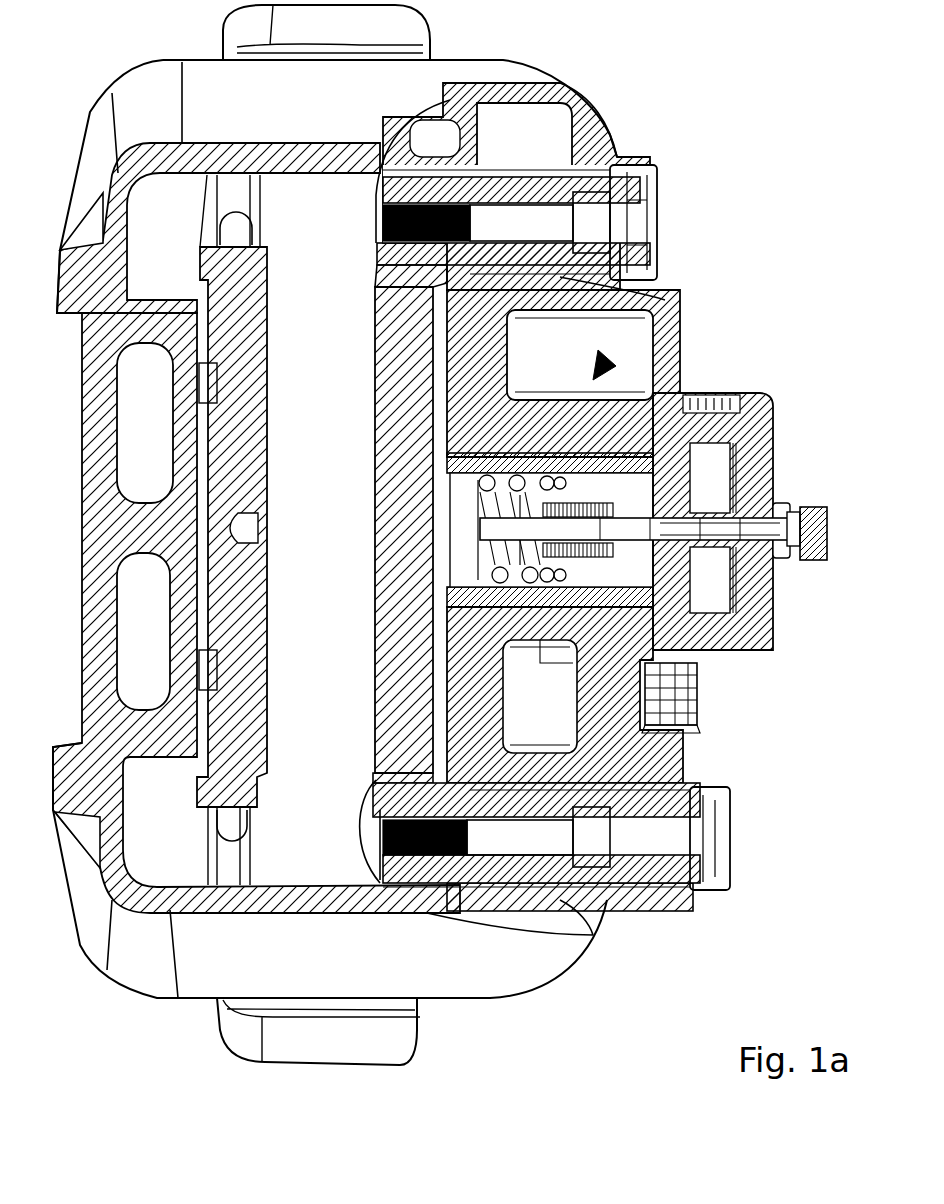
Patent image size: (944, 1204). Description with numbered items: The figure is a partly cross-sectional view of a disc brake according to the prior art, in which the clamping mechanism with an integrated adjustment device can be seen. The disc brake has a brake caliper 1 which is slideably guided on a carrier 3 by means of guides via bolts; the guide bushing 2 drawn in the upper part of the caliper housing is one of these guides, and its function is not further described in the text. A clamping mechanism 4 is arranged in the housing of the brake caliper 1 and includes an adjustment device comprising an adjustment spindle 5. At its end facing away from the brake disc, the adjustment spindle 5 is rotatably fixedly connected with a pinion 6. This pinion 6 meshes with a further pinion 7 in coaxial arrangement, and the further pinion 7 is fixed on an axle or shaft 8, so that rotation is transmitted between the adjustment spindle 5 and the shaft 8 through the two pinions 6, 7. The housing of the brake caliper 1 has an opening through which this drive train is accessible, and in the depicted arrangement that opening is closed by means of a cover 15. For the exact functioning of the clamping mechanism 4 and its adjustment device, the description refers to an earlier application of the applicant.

The brake caliper 1 is at (525, 967).
The first guide bearing 2 is at (545, 230).
The carrier 3 is at (390, 1047).
The clamping mechanism 4 is at (610, 358).
The adjustment spindle 5 is at (583, 470).
The pinion 6 is at (690, 393).
The further pinion 7 is at (630, 777).
The axle or shaft 8 is at (630, 690).
The cover 15 is at (695, 727).